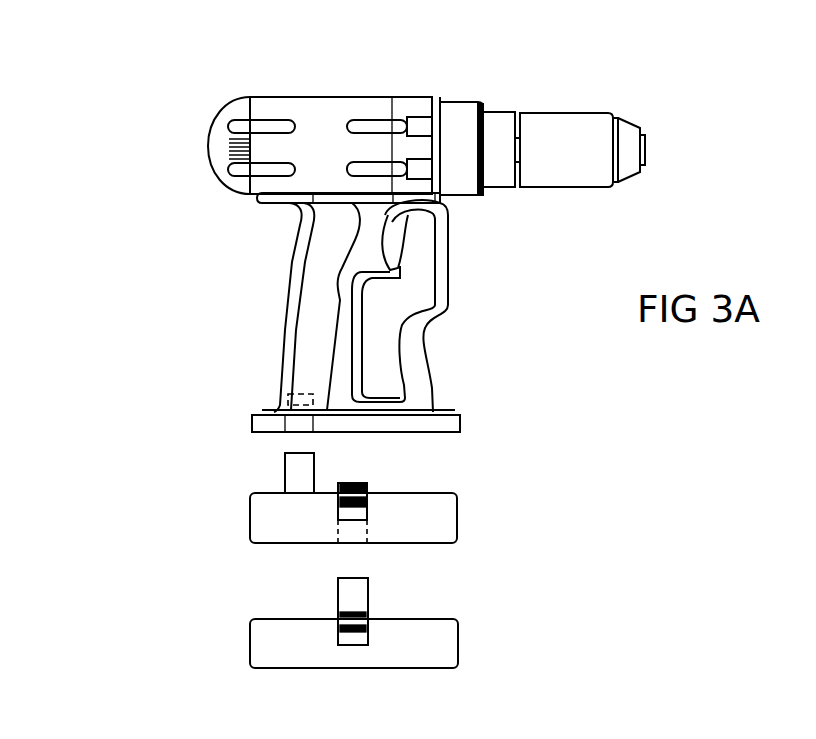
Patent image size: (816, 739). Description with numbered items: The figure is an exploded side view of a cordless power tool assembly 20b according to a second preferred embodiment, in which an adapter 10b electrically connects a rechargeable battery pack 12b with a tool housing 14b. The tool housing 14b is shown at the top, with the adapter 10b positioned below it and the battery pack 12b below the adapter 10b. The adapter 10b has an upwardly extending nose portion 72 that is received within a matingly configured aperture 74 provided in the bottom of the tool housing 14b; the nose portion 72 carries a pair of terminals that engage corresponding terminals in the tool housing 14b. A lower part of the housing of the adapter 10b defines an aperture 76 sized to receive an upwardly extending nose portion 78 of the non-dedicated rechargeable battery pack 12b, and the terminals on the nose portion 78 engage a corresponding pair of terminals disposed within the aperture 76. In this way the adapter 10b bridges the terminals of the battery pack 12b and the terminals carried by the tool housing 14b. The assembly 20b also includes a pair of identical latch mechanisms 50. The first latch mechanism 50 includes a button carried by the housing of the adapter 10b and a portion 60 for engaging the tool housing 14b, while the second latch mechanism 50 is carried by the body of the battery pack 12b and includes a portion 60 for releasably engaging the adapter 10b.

The cordless power tool assembly 20b is at (158, 111).
The tool housing 14b is at (296, 88).
The aperture 74 is at (283, 403).
The nose portion 72 is at (285, 470).
The adapter 10b is at (466, 510).
The portion 60 is at (351, 483).
The latch mechanism 50 is at (365, 493).
The aperture 76 is at (367, 528).
The nose portion 78 is at (368, 592).
The rechargeable battery pack 12b is at (466, 641).